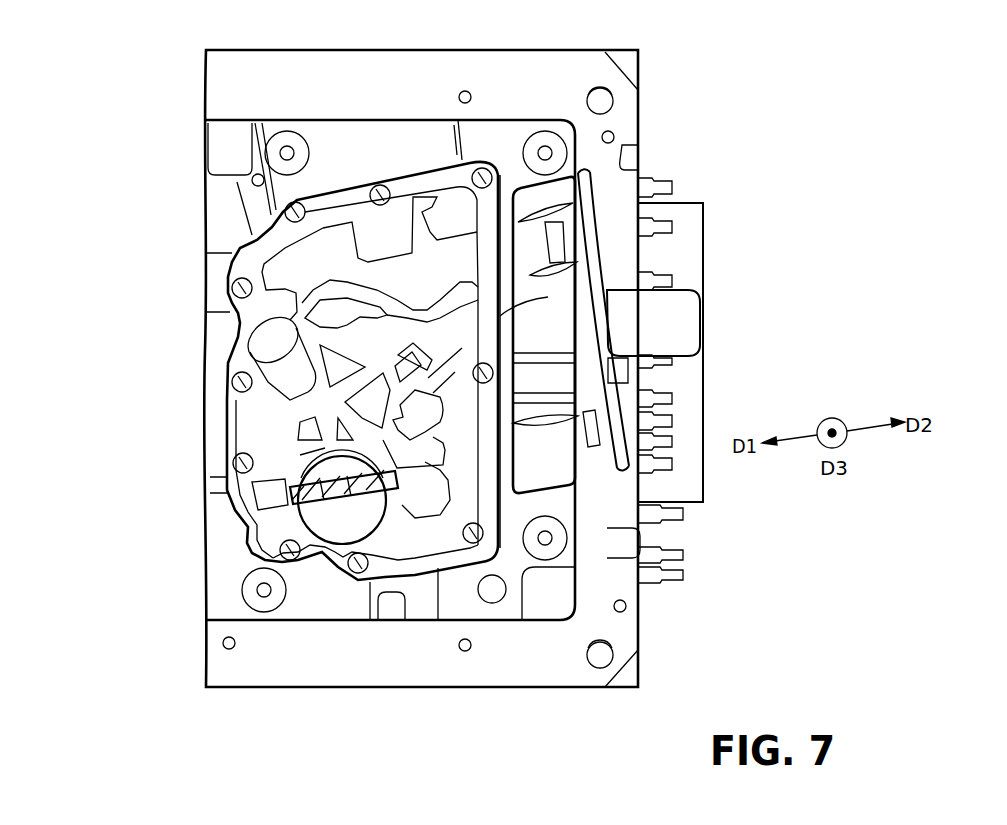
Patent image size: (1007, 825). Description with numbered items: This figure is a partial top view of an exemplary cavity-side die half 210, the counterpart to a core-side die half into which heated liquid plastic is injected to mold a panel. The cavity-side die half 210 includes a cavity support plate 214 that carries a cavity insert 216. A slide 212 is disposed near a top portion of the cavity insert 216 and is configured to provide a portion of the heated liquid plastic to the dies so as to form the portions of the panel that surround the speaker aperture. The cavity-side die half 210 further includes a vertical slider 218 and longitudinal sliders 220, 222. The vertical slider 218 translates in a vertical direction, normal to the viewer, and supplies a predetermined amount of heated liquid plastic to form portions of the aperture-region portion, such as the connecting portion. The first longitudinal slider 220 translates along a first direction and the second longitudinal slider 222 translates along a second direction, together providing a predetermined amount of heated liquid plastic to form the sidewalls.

The cavity-side die half 210 is at (173, 75).
The slide 212 is at (548, 297).
The cavity support plate 214 is at (290, 650).
The cavity insert 216 is at (222, 525).
The vertical slider 218 is at (300, 455).
The first longitudinal slider 220 is at (290, 498).
The second longitudinal slider 222 is at (343, 487).